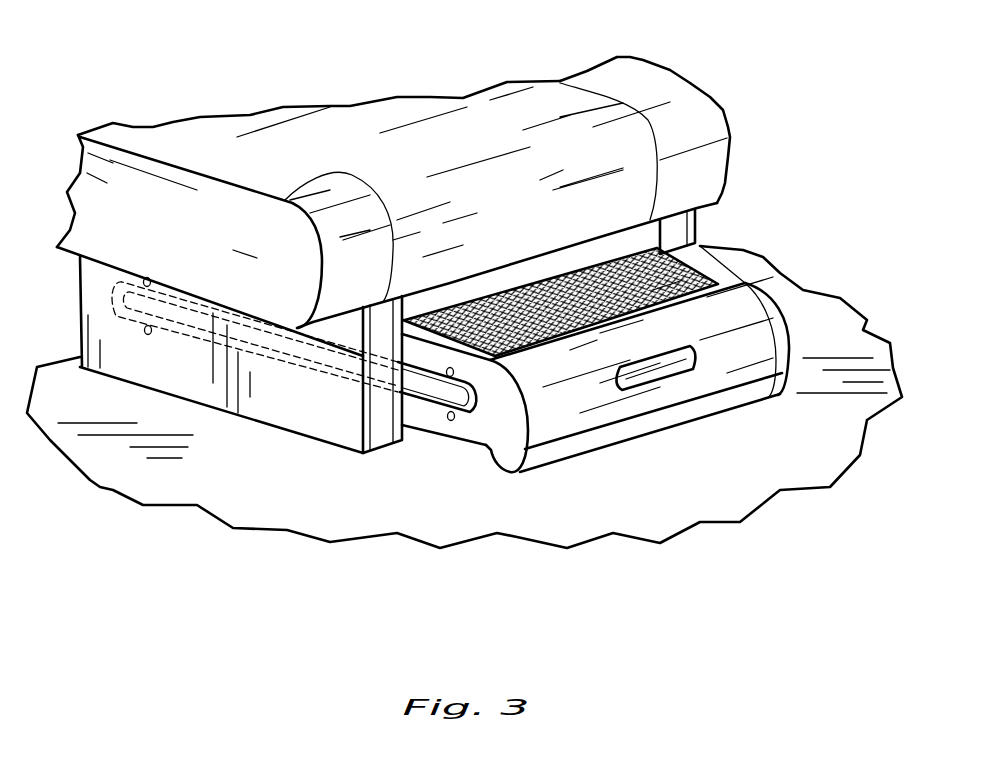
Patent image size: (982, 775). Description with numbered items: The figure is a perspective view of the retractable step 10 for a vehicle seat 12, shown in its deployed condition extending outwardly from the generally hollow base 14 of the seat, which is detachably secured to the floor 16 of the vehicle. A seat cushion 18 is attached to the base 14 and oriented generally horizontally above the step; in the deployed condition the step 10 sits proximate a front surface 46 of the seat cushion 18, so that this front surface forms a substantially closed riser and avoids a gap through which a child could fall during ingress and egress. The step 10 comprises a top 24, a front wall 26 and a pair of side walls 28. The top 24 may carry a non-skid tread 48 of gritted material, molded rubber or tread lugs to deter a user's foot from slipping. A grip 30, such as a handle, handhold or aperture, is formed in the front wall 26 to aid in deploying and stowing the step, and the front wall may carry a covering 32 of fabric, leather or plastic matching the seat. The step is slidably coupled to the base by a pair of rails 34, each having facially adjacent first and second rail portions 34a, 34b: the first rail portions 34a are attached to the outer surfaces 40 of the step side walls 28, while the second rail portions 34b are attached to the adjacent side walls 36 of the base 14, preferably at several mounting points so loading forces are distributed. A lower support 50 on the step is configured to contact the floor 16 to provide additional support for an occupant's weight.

The retractable step 10 is at (505, 395).
The vehicle seat 12 is at (377, 259).
The base 14 is at (160, 373).
The floor 16 is at (232, 492).
The seat cushion 18 is at (634, 72).
The top 24 is at (690, 268).
The front wall 26 is at (578, 424).
The side walls 28 is at (792, 339).
The grip 30 is at (662, 368).
The covering 32 is at (735, 355).
The rails 34 is at (294, 443).
The first rail portions 34a is at (463, 418).
The second rail portions 34b is at (417, 423).
The side walls of base 36 is at (338, 408).
The outer surfaces 40 is at (487, 427).
The front surface 46 is at (502, 209).
The non-skid tread 48 is at (712, 272).
The lower support 50 is at (495, 465).